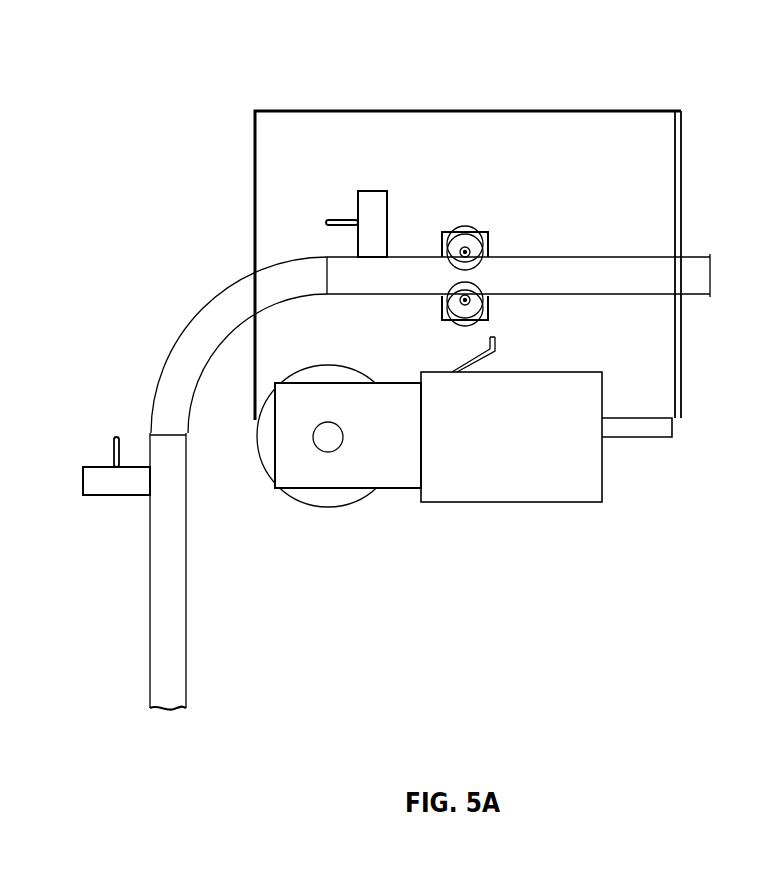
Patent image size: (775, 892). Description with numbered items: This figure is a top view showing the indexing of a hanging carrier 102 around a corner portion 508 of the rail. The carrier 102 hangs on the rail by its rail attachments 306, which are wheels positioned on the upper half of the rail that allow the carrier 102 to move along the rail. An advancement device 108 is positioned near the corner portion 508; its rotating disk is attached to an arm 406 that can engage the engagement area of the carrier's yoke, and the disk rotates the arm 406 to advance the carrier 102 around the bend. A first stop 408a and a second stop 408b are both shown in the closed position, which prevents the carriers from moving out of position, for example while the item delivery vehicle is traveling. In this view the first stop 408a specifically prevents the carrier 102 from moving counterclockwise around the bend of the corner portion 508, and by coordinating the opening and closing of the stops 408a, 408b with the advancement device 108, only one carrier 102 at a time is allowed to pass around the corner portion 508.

The carrier 102 is at (678, 110).
The corner portion 508 is at (207, 328).
The first stop 408a is at (384, 190).
The second stop 408b is at (116, 497).
The rail attachments 306 is at (490, 247).
The advancement device 108 is at (443, 538).
The arm 406 is at (497, 346).